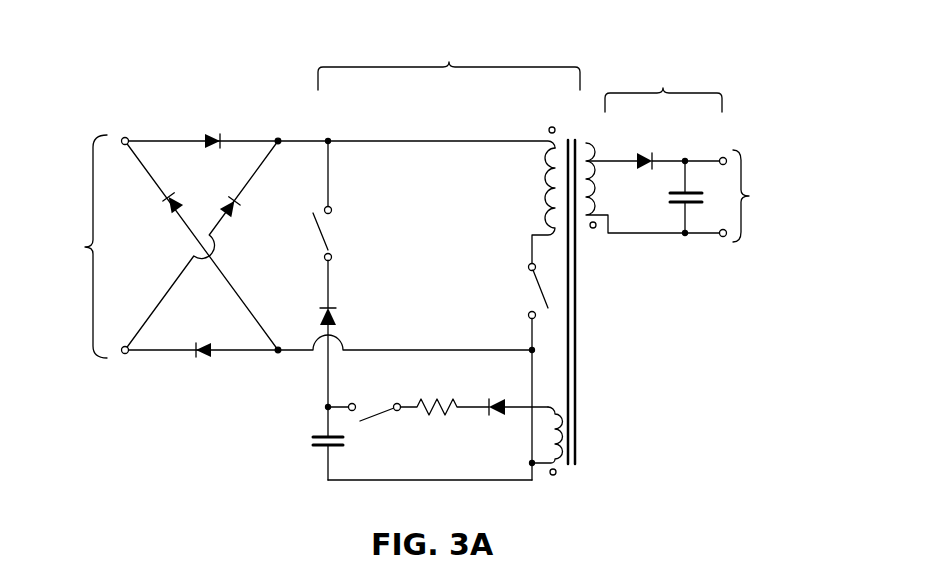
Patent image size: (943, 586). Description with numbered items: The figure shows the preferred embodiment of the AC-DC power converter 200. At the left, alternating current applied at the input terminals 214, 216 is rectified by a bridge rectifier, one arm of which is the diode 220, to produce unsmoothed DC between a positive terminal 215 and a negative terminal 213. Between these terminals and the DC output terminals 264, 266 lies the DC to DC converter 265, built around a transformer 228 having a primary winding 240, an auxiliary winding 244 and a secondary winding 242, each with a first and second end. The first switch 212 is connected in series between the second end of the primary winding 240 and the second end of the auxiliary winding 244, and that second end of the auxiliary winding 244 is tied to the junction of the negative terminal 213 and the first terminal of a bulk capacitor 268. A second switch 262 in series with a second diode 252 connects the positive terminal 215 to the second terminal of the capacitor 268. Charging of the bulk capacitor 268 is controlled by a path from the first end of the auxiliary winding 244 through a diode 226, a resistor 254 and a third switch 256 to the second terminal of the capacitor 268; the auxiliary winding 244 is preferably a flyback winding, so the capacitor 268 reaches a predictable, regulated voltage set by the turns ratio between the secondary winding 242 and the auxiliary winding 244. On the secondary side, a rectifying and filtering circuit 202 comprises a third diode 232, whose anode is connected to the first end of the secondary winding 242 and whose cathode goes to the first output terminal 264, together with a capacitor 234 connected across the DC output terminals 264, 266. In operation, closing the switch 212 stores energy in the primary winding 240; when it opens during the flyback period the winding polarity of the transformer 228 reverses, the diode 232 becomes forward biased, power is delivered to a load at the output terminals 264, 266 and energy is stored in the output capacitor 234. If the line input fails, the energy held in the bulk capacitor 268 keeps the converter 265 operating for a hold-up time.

The power converter 200 is at (162, 57).
The rectifying and filtering circuit 202 is at (663, 89).
The first switch 212 is at (538, 288).
The negative terminal 213 is at (278, 354).
The AC input terminal 214 is at (125, 146).
The positive terminal 215 is at (279, 145).
The AC input terminal 216 is at (125, 345).
The rectifier diode 220 is at (249, 140).
The diode 226 is at (500, 400).
The transformer 228 is at (568, 140).
The third diode 232 is at (645, 152).
The capacitor 234 is at (674, 203).
The primary winding 240 is at (549, 188).
The secondary winding 242 is at (586, 146).
The auxiliary winding 244 is at (556, 466).
The second diode 252 is at (321, 316).
The resistor 254 is at (441, 400).
The third switch 256 is at (378, 410).
The second switch 262 is at (322, 241).
The DC output terminal 264 is at (724, 157).
The DC to DC converter 265 is at (449, 63).
The DC output terminal 266 is at (723, 237).
The bulk capacitor 268 is at (313, 440).